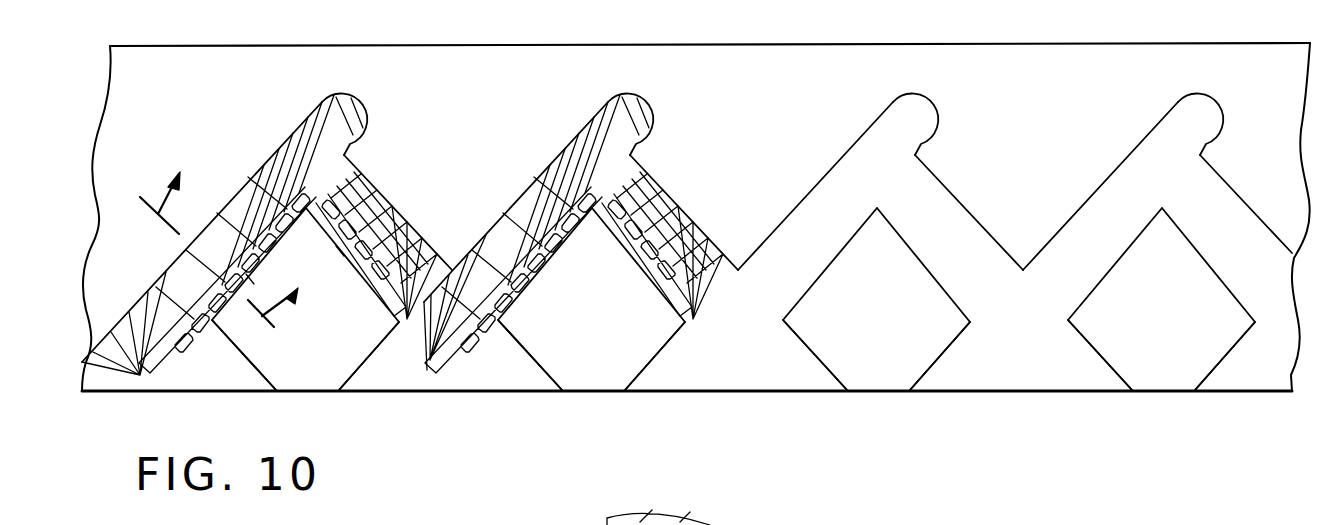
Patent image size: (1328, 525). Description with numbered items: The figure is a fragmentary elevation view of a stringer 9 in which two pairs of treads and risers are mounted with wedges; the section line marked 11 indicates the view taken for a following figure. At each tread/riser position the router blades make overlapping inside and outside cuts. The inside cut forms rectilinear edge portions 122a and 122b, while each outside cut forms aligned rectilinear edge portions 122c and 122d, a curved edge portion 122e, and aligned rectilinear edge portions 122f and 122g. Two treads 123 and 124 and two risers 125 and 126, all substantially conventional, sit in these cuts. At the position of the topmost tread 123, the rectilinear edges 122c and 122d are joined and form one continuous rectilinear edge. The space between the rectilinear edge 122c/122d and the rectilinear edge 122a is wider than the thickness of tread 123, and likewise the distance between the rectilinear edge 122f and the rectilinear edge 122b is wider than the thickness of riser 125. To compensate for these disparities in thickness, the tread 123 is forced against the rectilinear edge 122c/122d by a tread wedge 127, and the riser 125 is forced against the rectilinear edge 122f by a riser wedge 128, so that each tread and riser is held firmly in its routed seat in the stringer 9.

The panel 9 is at (1080, 82).
The section line 11- 11 is at (225, 246).
The rectilinear edge portion 122a is at (218, 322).
The rectilinear edge portion 122b is at (362, 357).
The rectilinear edge portion 122c is at (146, 297).
The rectilinear edge portion 122d is at (297, 128).
The curved edge portion 122e is at (338, 97).
The rectilinear edge portion 122f is at (388, 210).
The rectilinear edge portion 122g is at (232, 341).
The tread 123 is at (283, 158).
The tread 124 is at (550, 170).
The riser 125 is at (345, 163).
The riser 126 is at (637, 182).
The tread wedge 127 is at (254, 289).
The riser wedge 128 is at (340, 250).